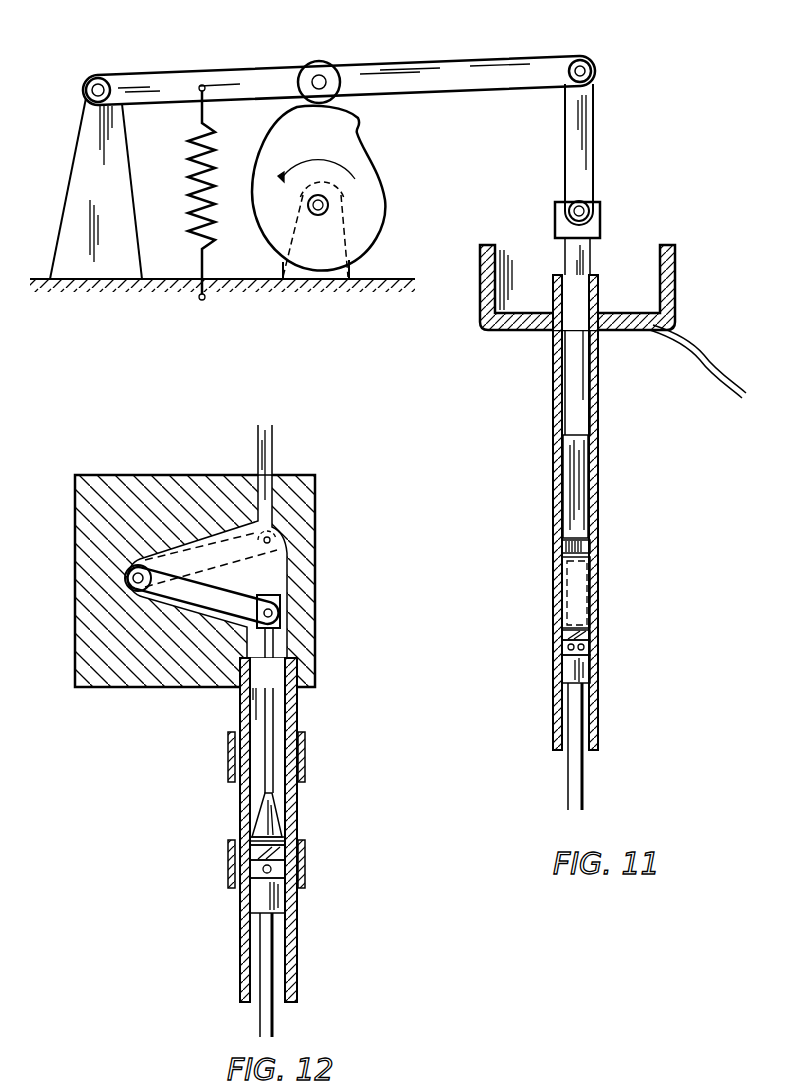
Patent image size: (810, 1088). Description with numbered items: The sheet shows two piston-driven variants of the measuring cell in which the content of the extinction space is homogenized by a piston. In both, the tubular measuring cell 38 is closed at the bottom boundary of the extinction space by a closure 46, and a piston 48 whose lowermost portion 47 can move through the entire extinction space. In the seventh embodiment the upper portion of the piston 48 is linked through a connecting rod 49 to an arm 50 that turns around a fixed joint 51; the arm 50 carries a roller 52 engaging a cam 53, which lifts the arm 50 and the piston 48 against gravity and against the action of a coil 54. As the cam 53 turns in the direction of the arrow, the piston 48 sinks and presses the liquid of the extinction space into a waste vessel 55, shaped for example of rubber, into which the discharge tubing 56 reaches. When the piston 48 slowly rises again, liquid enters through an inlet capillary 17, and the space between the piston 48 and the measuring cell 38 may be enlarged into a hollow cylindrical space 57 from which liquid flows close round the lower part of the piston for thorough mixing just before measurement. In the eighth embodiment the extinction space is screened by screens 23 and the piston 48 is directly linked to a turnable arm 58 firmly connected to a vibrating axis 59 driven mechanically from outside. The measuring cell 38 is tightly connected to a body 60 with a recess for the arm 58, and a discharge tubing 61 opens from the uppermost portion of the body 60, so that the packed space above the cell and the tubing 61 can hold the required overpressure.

In FIG. 11, the inlet capillary 17 is at (574, 779).
In FIG. 12, the inlet capillary 17 is at (230, 862).
In FIG. 12, the screens 23 is at (228, 760).
In FIG. 11, the tubular measuring cell 38 is at (598, 622).
In FIG. 12, the tubular measuring cell 38 is at (298, 712).
In FIG. 11, the closure 46 is at (591, 642).
In FIG. 12, the closure 46 is at (285, 847).
In FIG. 11, the lowermost portion of the piston 47 is at (598, 541).
In FIG. 12, the lowermost portion of the piston 47 is at (278, 812).
In FIG. 11, the piston 48 is at (600, 240).
In FIG. 12, the piston 48 is at (318, 661).
In FIG. 11, the link 49 is at (592, 118).
In FIG. 11, the arm 50 is at (406, 70).
In FIG. 11, the fixed joint 51 is at (93, 78).
In FIG. 11, the roller 52 is at (325, 62).
In FIG. 11, the cam 53 is at (285, 130).
In FIG. 11, the coil 54 is at (210, 125).
In FIG. 11, the waste vessel 55 is at (623, 323).
In FIG. 11, the discharge tubing 56 is at (713, 366).
In FIG. 11, the hollow cylindrical space 57 is at (600, 448).
In FIG. 12, the turnable arm 58 is at (285, 597).
In FIG. 12, the vibrating axis 59 is at (121, 578).
In FIG. 12, the body 60 is at (303, 517).
In FIG. 12, the discharge tubing 61 is at (266, 453).